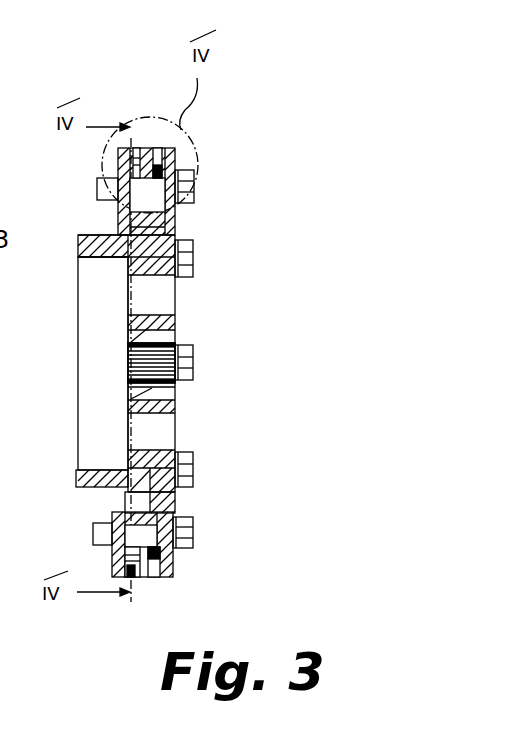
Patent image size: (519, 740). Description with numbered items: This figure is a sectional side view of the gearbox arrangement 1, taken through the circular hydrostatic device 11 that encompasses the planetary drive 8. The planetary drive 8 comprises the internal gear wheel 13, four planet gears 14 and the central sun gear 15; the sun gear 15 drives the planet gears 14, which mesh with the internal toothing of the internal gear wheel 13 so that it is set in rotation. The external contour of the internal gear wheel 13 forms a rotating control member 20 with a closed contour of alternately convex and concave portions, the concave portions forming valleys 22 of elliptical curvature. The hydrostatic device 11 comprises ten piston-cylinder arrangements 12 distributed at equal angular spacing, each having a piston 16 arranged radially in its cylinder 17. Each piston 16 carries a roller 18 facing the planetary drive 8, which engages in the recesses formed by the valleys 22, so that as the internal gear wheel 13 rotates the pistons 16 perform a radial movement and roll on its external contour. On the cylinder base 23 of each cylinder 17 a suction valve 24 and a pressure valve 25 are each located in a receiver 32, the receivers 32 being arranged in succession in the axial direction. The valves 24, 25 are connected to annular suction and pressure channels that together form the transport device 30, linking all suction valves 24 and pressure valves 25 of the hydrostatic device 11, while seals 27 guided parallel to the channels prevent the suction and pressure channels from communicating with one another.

The gearbox arrangement 1 is at (135, 554).
The planetary drive 8 is at (218, 377).
The hydrostatic device 11 is at (145, 361).
The piston-cylinder arrangement 12 is at (121, 554).
The internal gear wheel 13 is at (166, 493).
The planet gear 14 is at (165, 300).
The sun gear 15 is at (194, 369).
The piston 16 is at (160, 527).
The cylinder 17 is at (152, 546).
The roller 18 is at (112, 503).
The control member 20 is at (154, 132).
The valley 22 is at (150, 498).
The cylinder base 23 is at (143, 580).
The suction valve 24 is at (150, 146).
The pressure valve 25 is at (157, 147).
The seal 27 is at (165, 156).
The transport device 30 is at (162, 132).
The receiver 32 is at (118, 166).